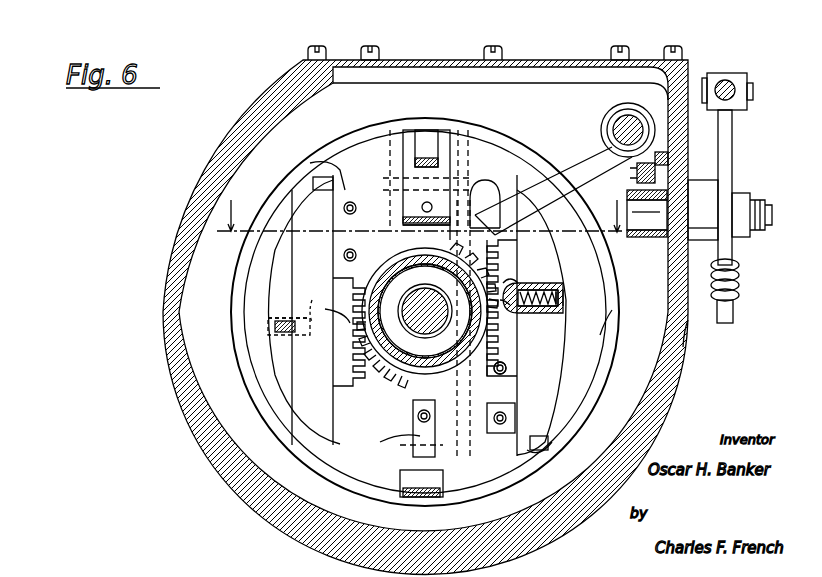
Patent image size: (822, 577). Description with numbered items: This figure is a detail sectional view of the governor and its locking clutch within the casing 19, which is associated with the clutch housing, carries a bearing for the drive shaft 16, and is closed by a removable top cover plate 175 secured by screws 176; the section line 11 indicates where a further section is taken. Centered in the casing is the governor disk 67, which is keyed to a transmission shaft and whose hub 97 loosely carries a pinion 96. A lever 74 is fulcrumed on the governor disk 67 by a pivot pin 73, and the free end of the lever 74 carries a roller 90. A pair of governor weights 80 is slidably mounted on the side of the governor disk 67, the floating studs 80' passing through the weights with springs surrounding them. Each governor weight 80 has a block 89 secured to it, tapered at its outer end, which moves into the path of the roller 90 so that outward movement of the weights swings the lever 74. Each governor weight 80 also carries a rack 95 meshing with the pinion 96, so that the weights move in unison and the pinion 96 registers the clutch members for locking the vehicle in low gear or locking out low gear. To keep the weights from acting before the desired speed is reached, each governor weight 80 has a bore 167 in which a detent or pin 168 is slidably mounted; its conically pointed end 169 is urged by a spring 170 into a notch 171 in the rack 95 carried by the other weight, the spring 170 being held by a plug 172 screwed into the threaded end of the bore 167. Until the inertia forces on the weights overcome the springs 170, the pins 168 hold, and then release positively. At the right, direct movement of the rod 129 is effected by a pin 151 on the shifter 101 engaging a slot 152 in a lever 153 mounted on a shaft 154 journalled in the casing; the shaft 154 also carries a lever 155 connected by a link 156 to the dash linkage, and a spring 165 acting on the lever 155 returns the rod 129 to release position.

The section line 11 is at (424, 208).
The drive shaft 16 is at (478, 298).
The casing 19 is at (683, 347).
The governor disk 67 is at (600, 335).
The pivot pin 73 is at (450, 192).
The lever 74 is at (437, 163).
The governor weight 80 is at (317, 310).
The floating stud 80' is at (435, 303).
The block 89 is at (430, 227).
The roller 90 is at (428, 472).
The rack 95 is at (503, 362).
The pinion 96 is at (502, 310).
The hub 97 is at (475, 386).
The shifter 101 is at (570, 158).
The rod 129 is at (628, 118).
The pin 151 is at (655, 168).
The slot 152 is at (660, 152).
The lever 153 is at (650, 200).
The shaft 154 is at (648, 225).
The lever 155 is at (725, 172).
The link 156 is at (745, 100).
The spring 165 is at (740, 284).
The bore 167 is at (562, 300).
The detent or pin 168 is at (528, 290).
The conically pointed end 169 is at (520, 285).
The spring 170 is at (560, 313).
The notch 171 is at (577, 312).
The plug 172 is at (565, 305).
The top cover plate 175 is at (372, 52).
The screws 176 is at (570, 50).